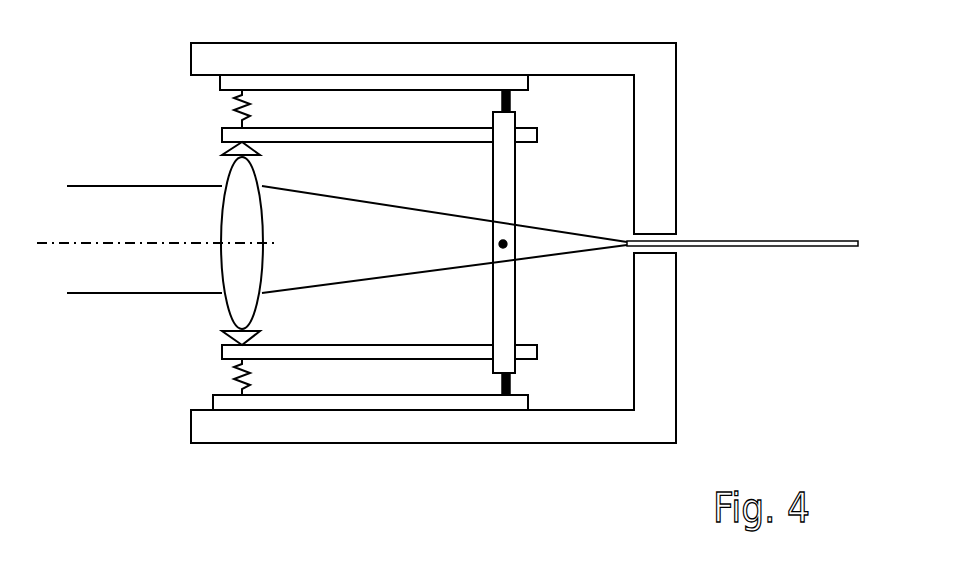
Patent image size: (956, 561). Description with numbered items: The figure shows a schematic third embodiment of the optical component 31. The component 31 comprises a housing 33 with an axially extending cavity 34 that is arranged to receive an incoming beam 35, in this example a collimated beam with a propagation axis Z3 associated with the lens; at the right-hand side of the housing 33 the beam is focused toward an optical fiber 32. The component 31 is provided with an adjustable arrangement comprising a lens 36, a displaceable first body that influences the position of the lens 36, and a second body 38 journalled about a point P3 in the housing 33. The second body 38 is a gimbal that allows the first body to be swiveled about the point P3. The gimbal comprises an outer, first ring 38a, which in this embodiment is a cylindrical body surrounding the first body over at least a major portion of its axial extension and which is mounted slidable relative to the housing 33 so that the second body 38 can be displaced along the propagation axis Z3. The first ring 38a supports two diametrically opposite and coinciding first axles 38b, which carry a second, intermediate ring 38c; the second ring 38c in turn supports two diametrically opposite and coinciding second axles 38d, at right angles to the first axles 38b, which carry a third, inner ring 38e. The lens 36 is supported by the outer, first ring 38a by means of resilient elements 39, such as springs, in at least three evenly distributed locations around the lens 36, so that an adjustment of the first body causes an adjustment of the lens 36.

The component 31 is at (703, 33).
The optical fiber 32 is at (730, 238).
The housing 33 is at (660, 148).
The axially extending cavity 34 is at (595, 183).
The incoming beam 35 is at (155, 297).
The lens 36 is at (222, 198).
The second body 38 is at (407, 58).
The outer first ring 38a is at (452, 83).
The first axles 38b is at (508, 102).
The second intermediate ring 38c is at (499, 338).
The second axles 38d is at (508, 248).
The third inner ring 38e is at (530, 353).
The resilient elements 39 is at (232, 378).
The propagation axis Z3 is at (72, 244).
The point P3 is at (532, 246).